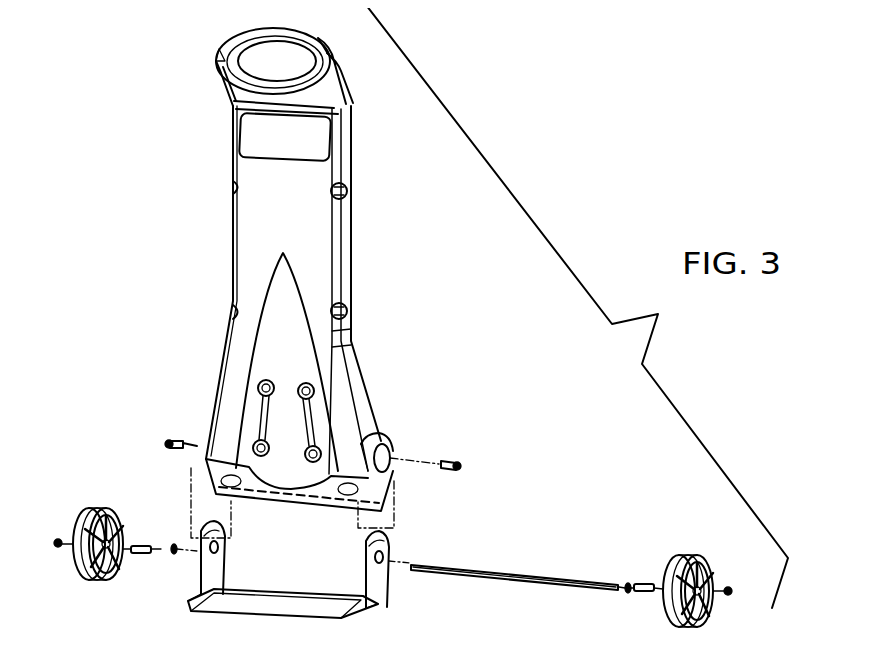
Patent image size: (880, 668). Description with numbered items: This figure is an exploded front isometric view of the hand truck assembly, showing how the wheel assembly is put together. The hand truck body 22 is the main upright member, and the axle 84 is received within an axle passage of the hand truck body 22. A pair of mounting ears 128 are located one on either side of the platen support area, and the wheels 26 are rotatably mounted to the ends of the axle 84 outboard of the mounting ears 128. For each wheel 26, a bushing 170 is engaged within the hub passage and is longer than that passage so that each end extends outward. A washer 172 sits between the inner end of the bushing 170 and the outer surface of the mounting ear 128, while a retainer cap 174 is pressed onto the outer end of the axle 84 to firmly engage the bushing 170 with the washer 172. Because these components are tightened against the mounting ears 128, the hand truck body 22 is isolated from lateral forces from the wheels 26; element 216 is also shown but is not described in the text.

The hand truck body 22 is at (366, 252).
The wheel 26 is at (95, 500).
The axle 84 is at (512, 568).
The mounting ear 128 is at (197, 563).
The bushing 170 is at (142, 540).
The washer 172 is at (173, 542).
The retainer cap 174 is at (58, 550).
The foot plate 216 is at (190, 614).